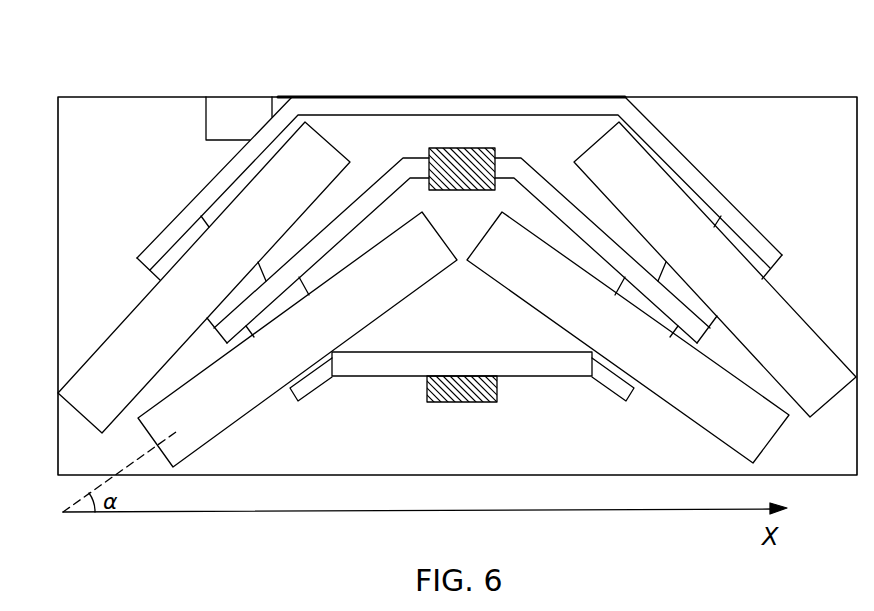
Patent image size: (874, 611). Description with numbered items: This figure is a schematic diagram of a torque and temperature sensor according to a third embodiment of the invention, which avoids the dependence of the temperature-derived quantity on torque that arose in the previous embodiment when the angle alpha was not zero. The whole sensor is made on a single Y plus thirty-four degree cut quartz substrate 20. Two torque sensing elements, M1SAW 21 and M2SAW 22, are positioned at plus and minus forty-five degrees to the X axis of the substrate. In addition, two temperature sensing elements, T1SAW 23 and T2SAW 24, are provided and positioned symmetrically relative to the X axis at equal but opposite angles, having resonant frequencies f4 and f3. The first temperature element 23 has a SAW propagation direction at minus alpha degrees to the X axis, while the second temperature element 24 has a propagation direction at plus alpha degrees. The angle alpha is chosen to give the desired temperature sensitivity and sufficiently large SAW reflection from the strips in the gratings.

The Y+34° cut quartz substrate 20 is at (158, 124).
The first torque sensing element M1SAW 21 is at (657, 217).
The second torque sensing element M2SAW 22 is at (174, 282).
The first temperature sensing element T1SAW 23 is at (748, 430).
The second temperature sensing element T2SAW 24 is at (215, 407).